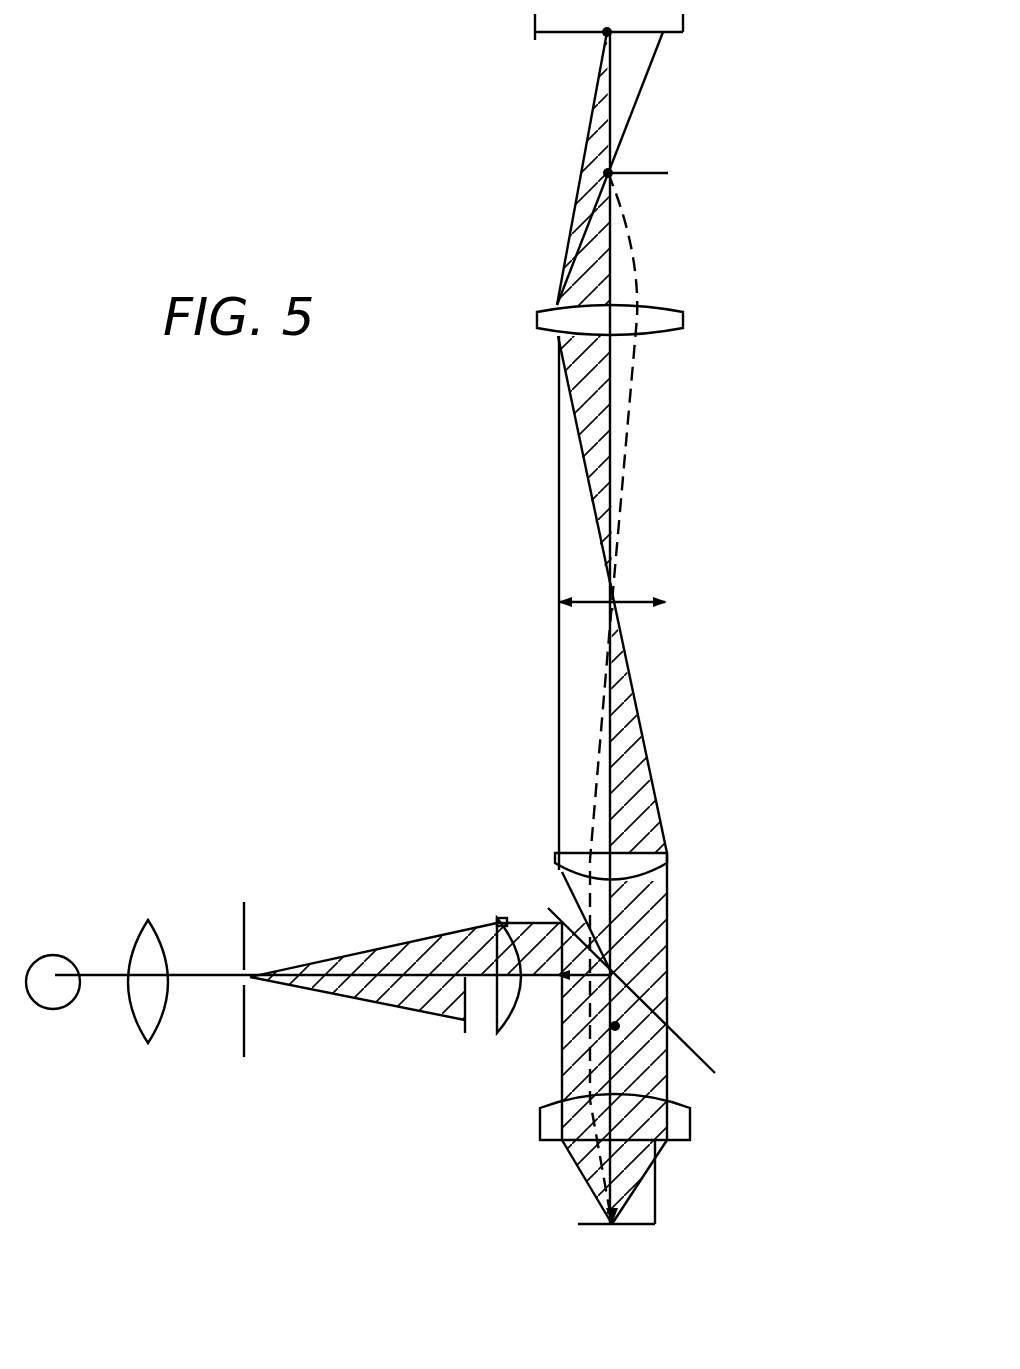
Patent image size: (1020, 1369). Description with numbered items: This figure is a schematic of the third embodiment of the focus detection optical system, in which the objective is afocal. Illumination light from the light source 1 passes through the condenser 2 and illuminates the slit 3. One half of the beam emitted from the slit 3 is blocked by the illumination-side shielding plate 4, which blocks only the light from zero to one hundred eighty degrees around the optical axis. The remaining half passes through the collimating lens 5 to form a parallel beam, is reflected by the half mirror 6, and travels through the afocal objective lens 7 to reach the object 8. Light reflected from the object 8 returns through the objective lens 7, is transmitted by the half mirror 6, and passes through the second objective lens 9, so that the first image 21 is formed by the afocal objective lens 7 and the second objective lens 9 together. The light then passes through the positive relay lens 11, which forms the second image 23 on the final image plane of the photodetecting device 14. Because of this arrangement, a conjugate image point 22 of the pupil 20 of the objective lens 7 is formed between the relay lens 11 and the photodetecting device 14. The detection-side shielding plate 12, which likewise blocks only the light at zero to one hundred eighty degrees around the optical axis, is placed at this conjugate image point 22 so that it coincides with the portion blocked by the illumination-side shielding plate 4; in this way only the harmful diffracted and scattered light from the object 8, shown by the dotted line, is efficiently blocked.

The light source 1 is at (60, 972).
The condenser 2 is at (152, 940).
The slit 3 is at (248, 932).
The illumination-side shielding plate 4 is at (466, 1030).
The collimating lens 5 is at (500, 918).
The half mirror 6 is at (712, 1070).
The objective lens 7 is at (690, 1122).
The object 8 is at (595, 1228).
The second objective lens 9 is at (670, 856).
The relay lens 11 is at (672, 332).
The detection-side shielding plate 12 is at (665, 173).
The photodetecting device 14 is at (535, 31).
The pupil 20 is at (618, 1022).
The first image 21 is at (618, 600).
The conjugate image point 22 is at (605, 173).
The second image 23 is at (604, 36).